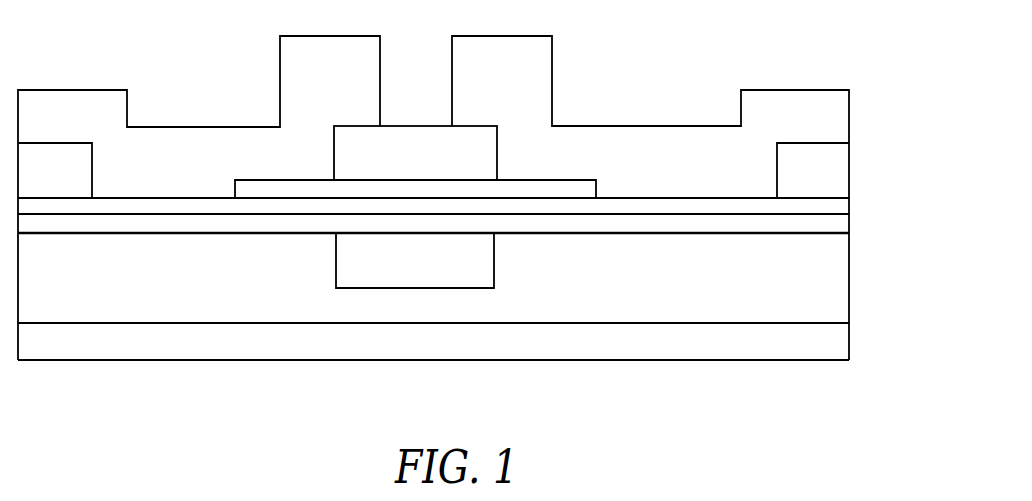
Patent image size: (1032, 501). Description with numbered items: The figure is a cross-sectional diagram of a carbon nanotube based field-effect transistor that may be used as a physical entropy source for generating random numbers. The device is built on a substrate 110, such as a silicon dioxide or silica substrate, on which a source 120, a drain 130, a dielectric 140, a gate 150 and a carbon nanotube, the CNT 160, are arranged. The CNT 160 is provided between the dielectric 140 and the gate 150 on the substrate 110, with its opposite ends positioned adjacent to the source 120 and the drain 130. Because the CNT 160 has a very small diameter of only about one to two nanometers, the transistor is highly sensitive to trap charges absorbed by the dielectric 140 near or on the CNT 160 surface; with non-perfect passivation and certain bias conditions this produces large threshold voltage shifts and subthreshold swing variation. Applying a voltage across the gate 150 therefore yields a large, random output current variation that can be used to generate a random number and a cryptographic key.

The substrate 110 is at (820, 287).
The source 120 is at (212, 172).
The drain 130 is at (725, 174).
The dielectric 140 is at (433, 111).
The gate 150 is at (462, 272).
The CNT 160 is at (582, 179).